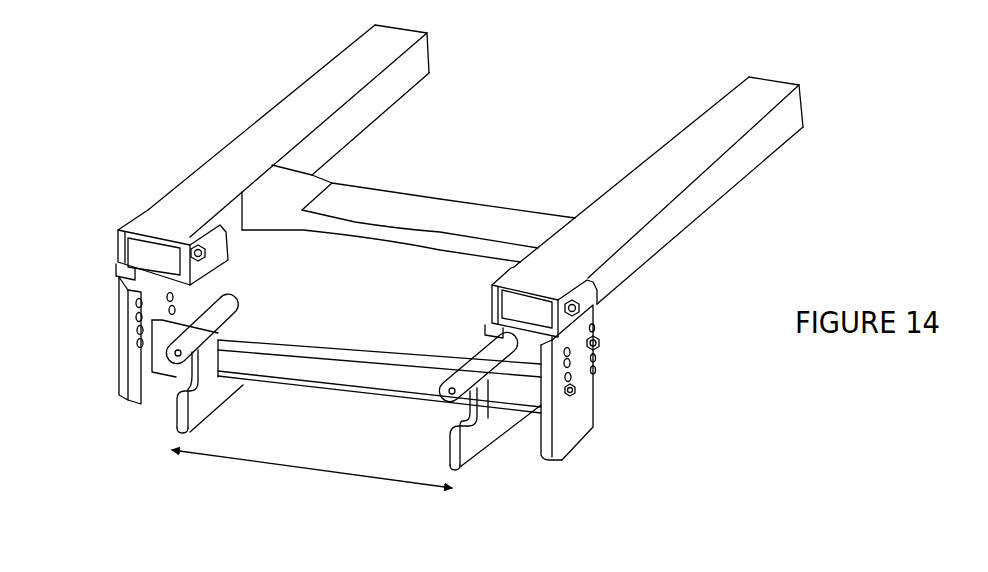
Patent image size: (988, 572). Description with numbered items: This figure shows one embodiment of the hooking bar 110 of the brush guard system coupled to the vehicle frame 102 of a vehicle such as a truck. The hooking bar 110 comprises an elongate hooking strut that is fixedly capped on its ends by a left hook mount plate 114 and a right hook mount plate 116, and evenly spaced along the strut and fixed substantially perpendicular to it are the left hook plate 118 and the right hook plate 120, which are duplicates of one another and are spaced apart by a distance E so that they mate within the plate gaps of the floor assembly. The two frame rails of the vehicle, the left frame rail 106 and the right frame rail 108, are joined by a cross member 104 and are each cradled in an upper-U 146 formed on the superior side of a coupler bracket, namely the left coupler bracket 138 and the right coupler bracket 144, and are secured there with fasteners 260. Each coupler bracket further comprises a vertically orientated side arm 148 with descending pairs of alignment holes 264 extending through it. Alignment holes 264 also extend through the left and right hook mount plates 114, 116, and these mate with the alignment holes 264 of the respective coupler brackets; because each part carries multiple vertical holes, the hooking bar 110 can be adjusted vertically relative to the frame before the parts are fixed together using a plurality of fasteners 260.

The vehicle frame 102 is at (262, 120).
The cross member 104 is at (424, 195).
The left frame rail 106 is at (722, 213).
The right frame rail 108 is at (312, 80).
The hooking bar 110 is at (322, 323).
The left hook mount plate 114 is at (546, 462).
The right hook mount plate 116 is at (139, 399).
The left hook plate 118 is at (476, 463).
The right hook plate 120 is at (173, 411).
The left coupler bracket 138 is at (600, 313).
The right coupler bracket 144 is at (135, 208).
The upper-U 146 is at (138, 282).
The side arm 148 is at (117, 303).
The fasteners 260 is at (208, 254).
The alignment holes 264 is at (173, 307).
The distance E is at (312, 478).